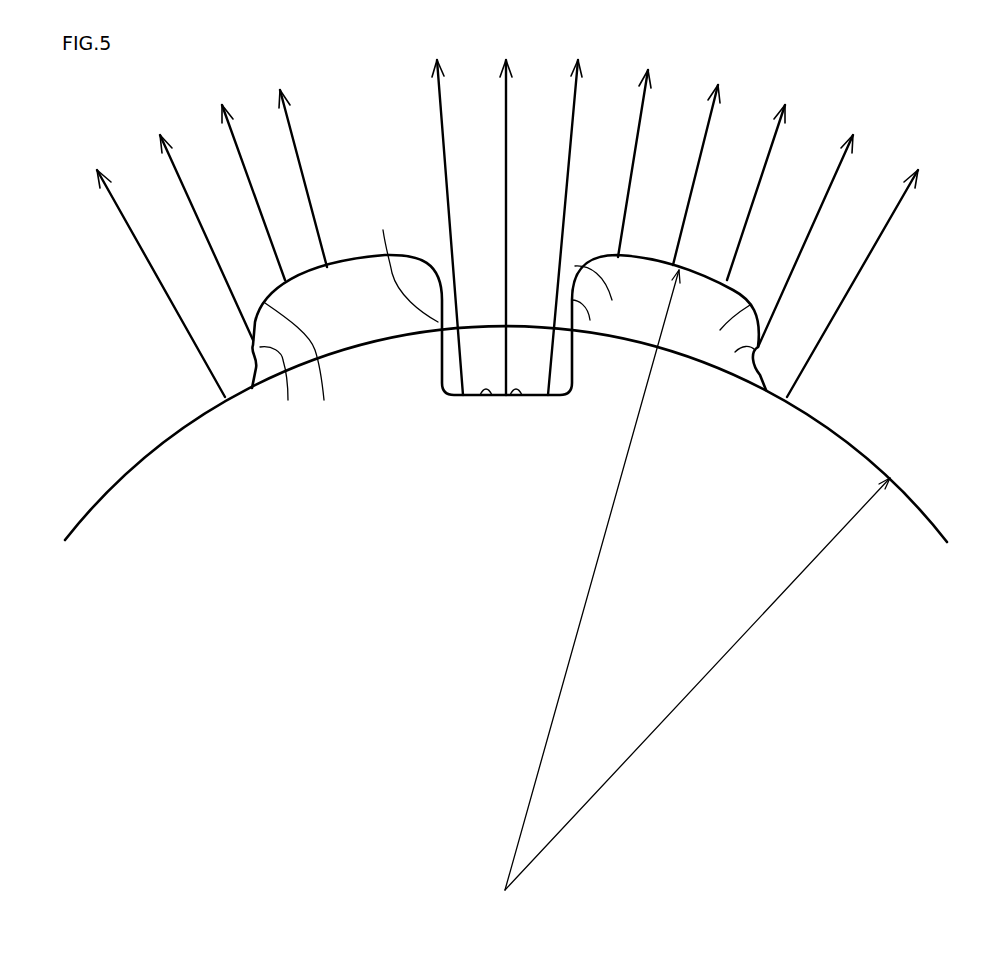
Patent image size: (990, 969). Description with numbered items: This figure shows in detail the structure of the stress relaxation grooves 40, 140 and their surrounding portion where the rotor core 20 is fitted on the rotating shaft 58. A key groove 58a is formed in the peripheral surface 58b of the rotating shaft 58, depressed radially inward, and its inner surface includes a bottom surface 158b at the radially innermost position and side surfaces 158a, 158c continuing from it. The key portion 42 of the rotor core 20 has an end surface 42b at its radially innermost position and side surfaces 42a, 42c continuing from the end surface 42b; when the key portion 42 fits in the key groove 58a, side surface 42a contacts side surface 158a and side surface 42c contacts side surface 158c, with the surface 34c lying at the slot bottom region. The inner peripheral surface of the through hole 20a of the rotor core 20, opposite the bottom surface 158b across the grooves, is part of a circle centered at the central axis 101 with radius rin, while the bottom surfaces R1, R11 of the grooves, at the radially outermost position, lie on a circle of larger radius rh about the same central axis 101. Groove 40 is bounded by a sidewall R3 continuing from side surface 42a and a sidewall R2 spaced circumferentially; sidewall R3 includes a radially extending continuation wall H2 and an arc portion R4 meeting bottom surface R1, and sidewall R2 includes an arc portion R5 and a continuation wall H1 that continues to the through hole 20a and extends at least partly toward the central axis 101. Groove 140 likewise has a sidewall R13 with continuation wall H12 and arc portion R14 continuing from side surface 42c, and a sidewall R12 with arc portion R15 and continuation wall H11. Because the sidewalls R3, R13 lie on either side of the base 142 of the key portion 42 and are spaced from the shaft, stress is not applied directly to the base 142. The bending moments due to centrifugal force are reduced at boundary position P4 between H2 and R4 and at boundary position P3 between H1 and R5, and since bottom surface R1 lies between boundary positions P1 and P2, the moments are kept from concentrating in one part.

The rotor core 20 is at (770, 372).
The through hole 20a is at (140, 463).
The rotating shaft 58 is at (842, 458).
The key groove 58a is at (506, 395).
The peripheral surface 58b is at (205, 405).
The stress relaxation groove 140 is at (323, 290).
The stress relaxation groove 40 is at (695, 322).
The key portion 42 is at (438, 333).
The base 142 is at (497, 270).
The side surface 42a is at (574, 388).
The end surface 42b is at (520, 393).
The side surface 42c is at (440, 382).
The slot bottom 34c is at (470, 377).
The side surface 158a is at (565, 340).
The bottom surface 158b is at (485, 393).
The side surface 158c is at (446, 390).
The boundary position P1 is at (620, 258).
The boundary position P2 is at (748, 305).
The boundary position P3 is at (766, 322).
The boundary position P4 is at (575, 288).
The bottom surface R1 is at (710, 282).
The sidewall R2 is at (752, 450).
The sidewall R3 is at (625, 450).
The arc portion R4 is at (612, 300).
The arc portion R5 is at (720, 330).
The bottom surface R11 is at (338, 275).
The sidewall R12 is at (262, 415).
The sidewall R13 is at (360, 199).
The arc portion R14 is at (418, 268).
The arc portion R15 is at (304, 359).
The continuation wall H1 is at (735, 352).
The continuation wall H2 is at (590, 320).
The continuation wall H11 is at (281, 381).
The continuation wall H12 is at (397, 262).
The radius rh is at (592, 580).
The radius rin is at (697, 684).
The central axis 101 is at (505, 892).